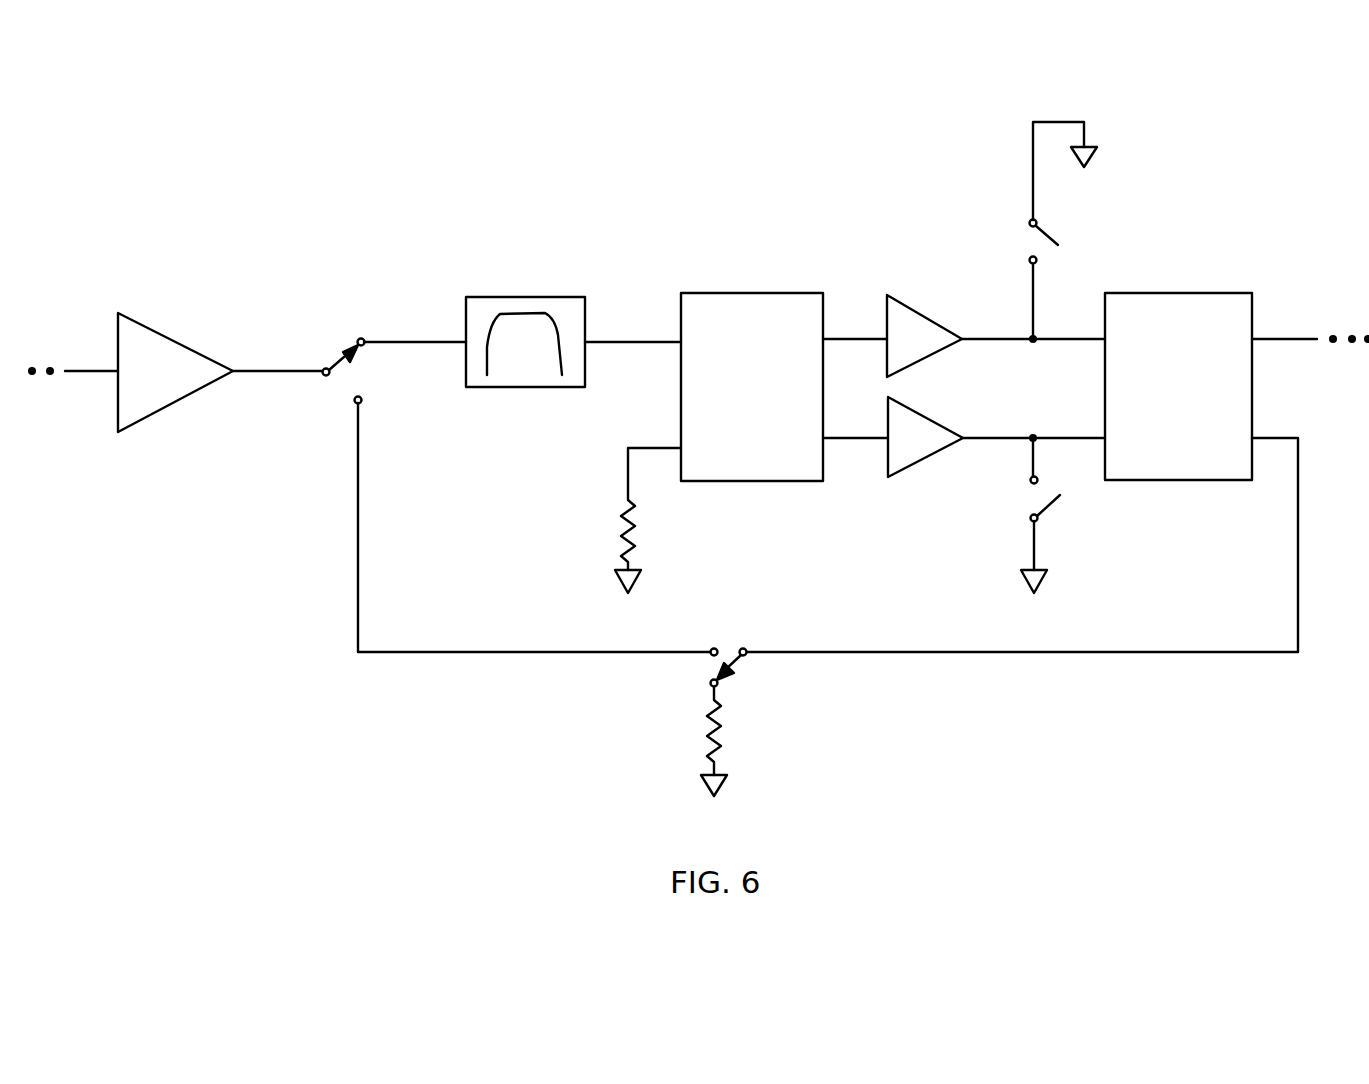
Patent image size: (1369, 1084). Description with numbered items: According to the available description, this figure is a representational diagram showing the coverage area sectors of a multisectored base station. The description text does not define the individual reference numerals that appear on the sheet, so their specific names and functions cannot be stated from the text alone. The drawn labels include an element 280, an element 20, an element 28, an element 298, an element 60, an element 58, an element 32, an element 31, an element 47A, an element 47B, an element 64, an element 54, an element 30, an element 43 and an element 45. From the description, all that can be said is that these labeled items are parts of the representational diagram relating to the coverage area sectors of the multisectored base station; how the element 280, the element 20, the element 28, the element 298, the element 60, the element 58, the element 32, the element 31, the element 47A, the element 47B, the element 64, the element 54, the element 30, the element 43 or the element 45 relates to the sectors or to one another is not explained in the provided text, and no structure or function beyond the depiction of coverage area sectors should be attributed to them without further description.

The driver amplifier 280 is at (128, 313).
The switch 20 is at (328, 366).
The signal line 28 is at (393, 342).
The band pass filter 298 is at (556, 297).
The quadrature hybrid splitter 60 is at (775, 293).
The isolation resistor 58 is at (625, 510).
The power amplifier 32 is at (897, 295).
The power amplifier 31 is at (893, 477).
The switch 47A is at (1030, 223).
The switch 47B is at (1033, 514).
The quadrature hybrid combiner 64 is at (1195, 293).
The output line 54 is at (1272, 339).
The feedback line 30 is at (475, 652).
The switch 43 is at (742, 650).
The termination resistor 45 is at (718, 750).